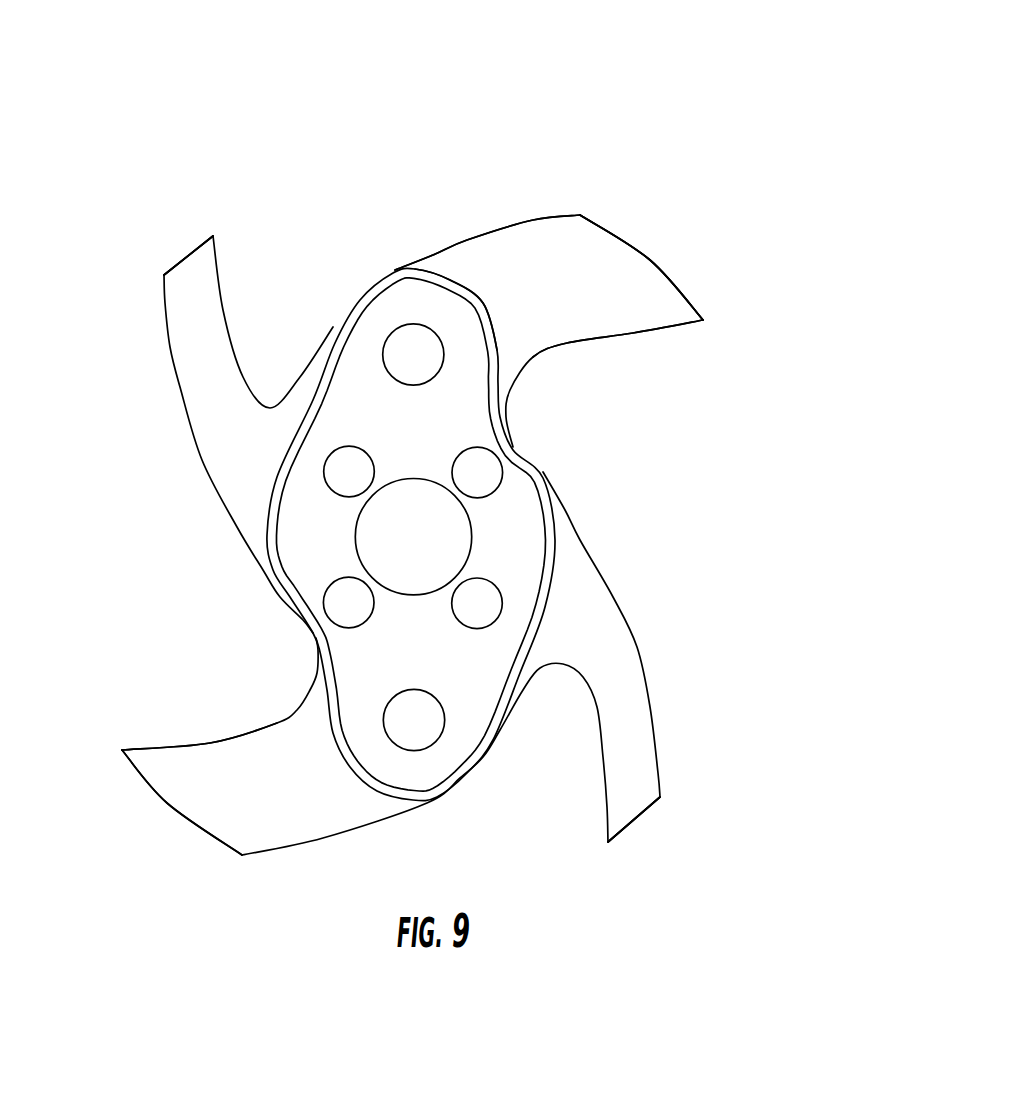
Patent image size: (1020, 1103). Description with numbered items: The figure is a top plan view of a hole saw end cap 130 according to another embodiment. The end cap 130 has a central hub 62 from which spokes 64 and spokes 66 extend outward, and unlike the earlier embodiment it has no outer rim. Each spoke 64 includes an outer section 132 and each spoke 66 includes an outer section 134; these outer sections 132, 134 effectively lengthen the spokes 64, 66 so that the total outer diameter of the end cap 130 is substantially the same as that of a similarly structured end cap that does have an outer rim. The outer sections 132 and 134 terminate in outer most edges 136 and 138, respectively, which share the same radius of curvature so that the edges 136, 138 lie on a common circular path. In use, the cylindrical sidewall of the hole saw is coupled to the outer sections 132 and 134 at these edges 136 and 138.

The end cap 130 is at (752, 85).
The hub 62 is at (451, 744).
The spokes 64 is at (203, 368).
The spokes 66 is at (528, 313).
The outer section 132 is at (202, 265).
The outer section 134 is at (618, 290).
The outer most edge 136 is at (179, 256).
The outer most edge 138 is at (618, 233).